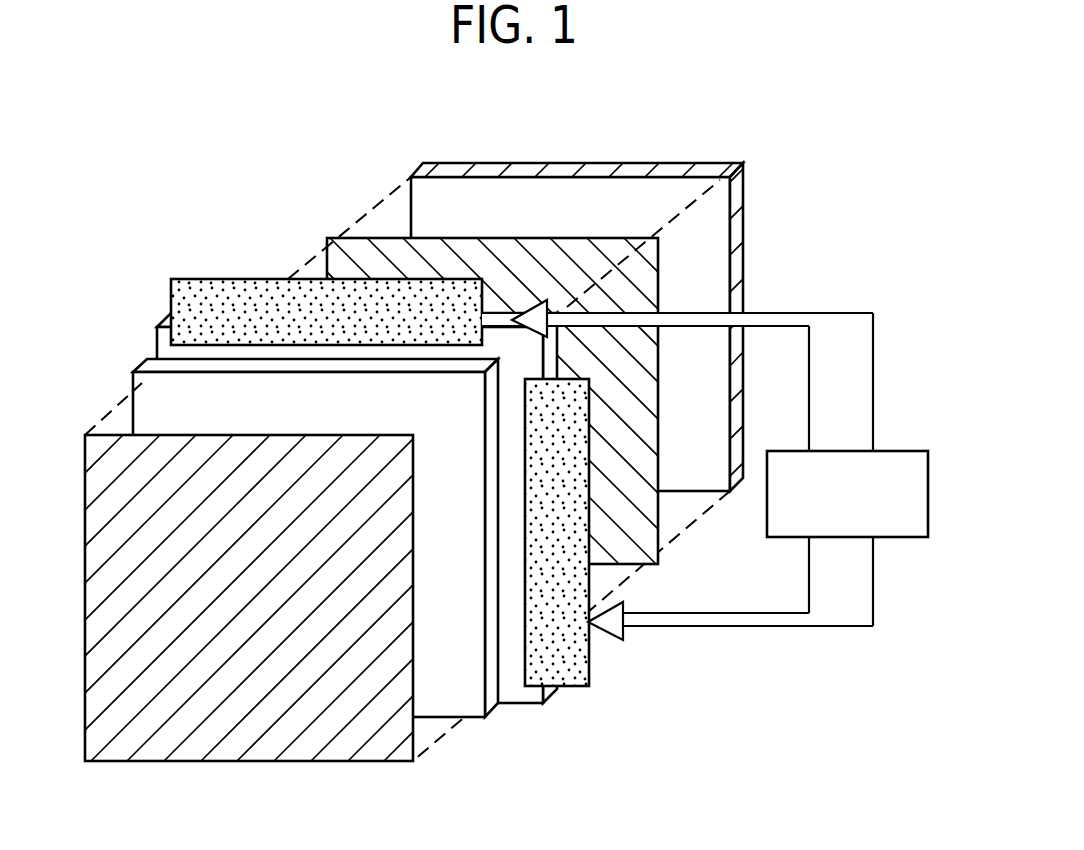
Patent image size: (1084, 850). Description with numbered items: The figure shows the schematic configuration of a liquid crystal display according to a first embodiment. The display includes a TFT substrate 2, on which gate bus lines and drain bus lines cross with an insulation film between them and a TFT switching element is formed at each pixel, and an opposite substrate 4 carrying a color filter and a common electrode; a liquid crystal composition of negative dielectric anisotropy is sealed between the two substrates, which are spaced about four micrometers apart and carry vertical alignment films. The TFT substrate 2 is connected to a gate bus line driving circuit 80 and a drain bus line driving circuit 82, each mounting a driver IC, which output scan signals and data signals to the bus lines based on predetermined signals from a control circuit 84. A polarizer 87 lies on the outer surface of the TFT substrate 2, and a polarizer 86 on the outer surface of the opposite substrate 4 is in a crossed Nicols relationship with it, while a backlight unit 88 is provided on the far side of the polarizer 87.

The TFT substrate 2 is at (518, 703).
The opposite substrate 4 is at (475, 718).
The gate bus line driving circuit 80 is at (583, 670).
The drain bus line driving circuit 82 is at (225, 282).
The control circuit 84 is at (915, 451).
The polarizer 86 is at (263, 761).
The polarizer 87 is at (658, 538).
The backlight unit 88 is at (747, 212).